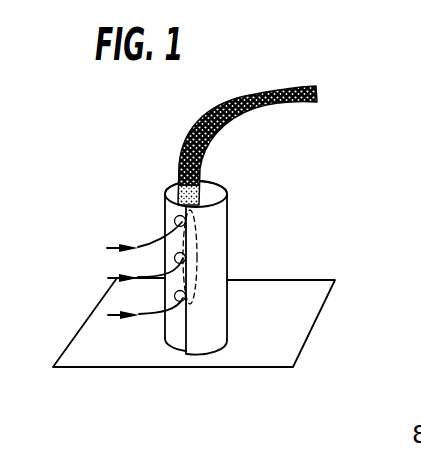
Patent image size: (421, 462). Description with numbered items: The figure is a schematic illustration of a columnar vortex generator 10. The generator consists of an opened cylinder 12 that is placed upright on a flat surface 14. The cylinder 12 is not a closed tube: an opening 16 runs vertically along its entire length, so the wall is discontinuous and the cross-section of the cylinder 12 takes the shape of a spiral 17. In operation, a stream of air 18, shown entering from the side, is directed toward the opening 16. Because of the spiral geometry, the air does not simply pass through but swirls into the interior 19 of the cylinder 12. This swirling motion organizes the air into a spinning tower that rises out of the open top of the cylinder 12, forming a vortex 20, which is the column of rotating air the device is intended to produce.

The columnar vortex generator 10 is at (110, 129).
The opened cylinder 12 is at (228, 268).
The flat surface 14 is at (333, 280).
The opening 16 is at (171, 214).
The spiral 17 is at (228, 197).
The stream of air 18 is at (107, 248).
The interior 19 is at (209, 187).
The vortex 20 is at (298, 103).